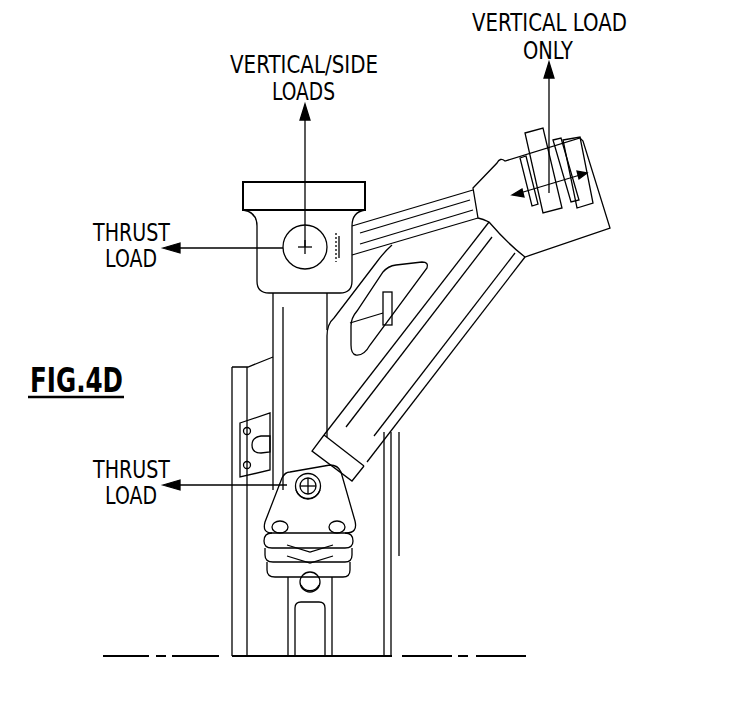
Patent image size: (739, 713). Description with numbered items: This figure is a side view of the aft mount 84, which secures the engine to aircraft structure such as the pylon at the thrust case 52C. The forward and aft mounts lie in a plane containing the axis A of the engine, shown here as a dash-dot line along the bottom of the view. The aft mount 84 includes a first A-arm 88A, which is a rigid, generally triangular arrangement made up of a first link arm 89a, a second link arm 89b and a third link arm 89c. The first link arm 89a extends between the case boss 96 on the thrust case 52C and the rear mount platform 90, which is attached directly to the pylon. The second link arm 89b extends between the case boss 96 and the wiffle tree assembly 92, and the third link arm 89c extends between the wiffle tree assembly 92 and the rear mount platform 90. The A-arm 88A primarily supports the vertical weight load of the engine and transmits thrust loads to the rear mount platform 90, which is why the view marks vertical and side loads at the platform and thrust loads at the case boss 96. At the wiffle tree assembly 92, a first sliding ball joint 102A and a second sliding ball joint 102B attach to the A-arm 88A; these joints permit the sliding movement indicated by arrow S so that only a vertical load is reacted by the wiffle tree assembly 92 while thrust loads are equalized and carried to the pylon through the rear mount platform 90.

The aft mount 84 is at (524, 373).
The first A-arm 88A is at (447, 400).
The first link arm 89a is at (290, 350).
The second link arm 89b is at (437, 213).
The third link arm 89c is at (458, 308).
The rear mount platform 90 is at (323, 192).
The wiffle tree assembly 92 is at (598, 131).
The case boss 96 is at (330, 508).
The first sliding ball joint 102A is at (597, 164).
The second sliding ball joint 102B is at (525, 150).
The arrow S is at (594, 192).
The thrust case 52C is at (406, 550).
The axis A is at (498, 657).